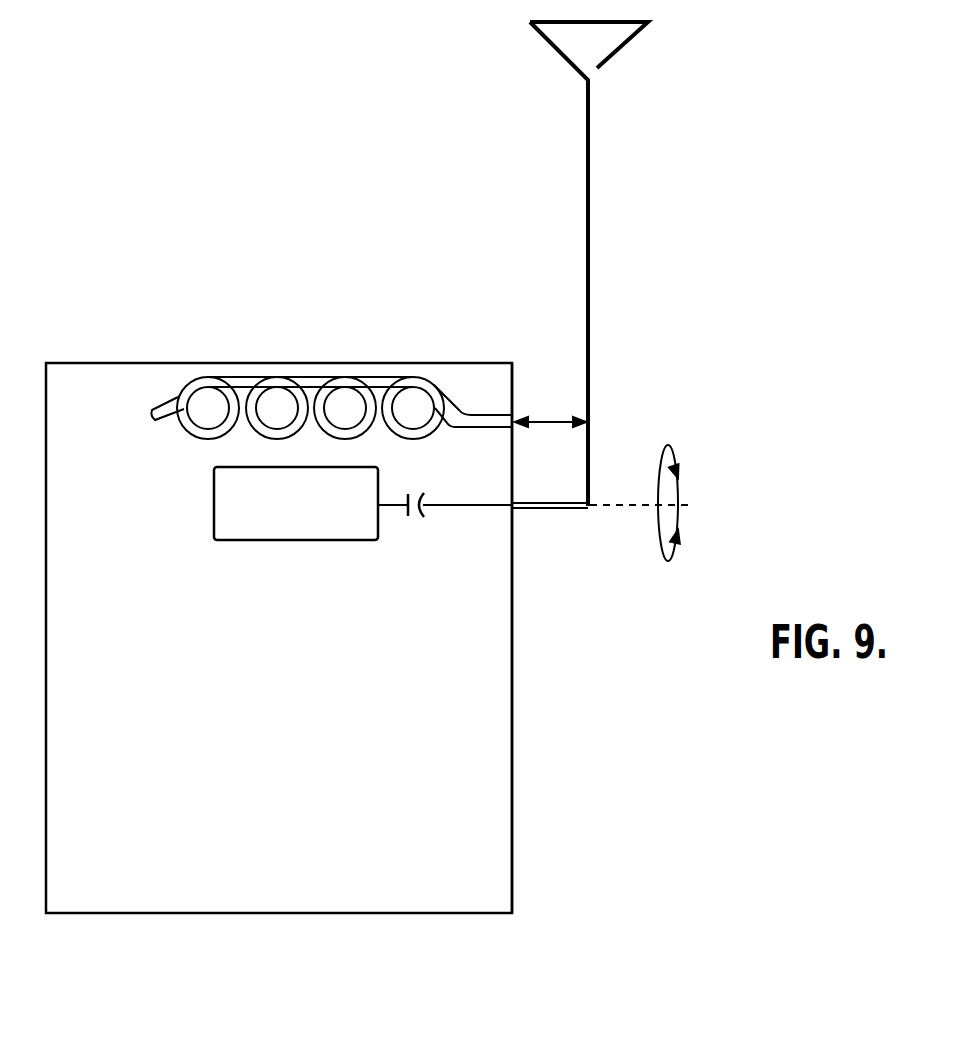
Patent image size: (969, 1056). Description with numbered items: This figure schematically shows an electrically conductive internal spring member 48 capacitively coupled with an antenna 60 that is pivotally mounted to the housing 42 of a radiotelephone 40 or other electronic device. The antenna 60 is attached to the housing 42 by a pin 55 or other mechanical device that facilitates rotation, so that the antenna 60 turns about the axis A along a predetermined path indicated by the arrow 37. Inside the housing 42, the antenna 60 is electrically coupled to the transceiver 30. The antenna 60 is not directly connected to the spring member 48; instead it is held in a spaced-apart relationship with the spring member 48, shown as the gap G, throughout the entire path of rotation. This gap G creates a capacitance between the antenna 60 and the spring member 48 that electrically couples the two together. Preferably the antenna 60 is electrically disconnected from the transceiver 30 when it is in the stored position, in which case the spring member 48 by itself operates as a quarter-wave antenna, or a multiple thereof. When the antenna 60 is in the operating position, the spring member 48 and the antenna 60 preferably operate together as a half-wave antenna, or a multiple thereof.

The transceiver 30 is at (206, 498).
The arrow 37 is at (665, 547).
The radiotelephone 40 is at (352, 942).
The housing 42 is at (514, 812).
The spring member 48 is at (207, 388).
The pin 55 is at (560, 512).
The antenna 60 is at (679, 191).
The gap G is at (544, 435).
The axis A is at (686, 504).